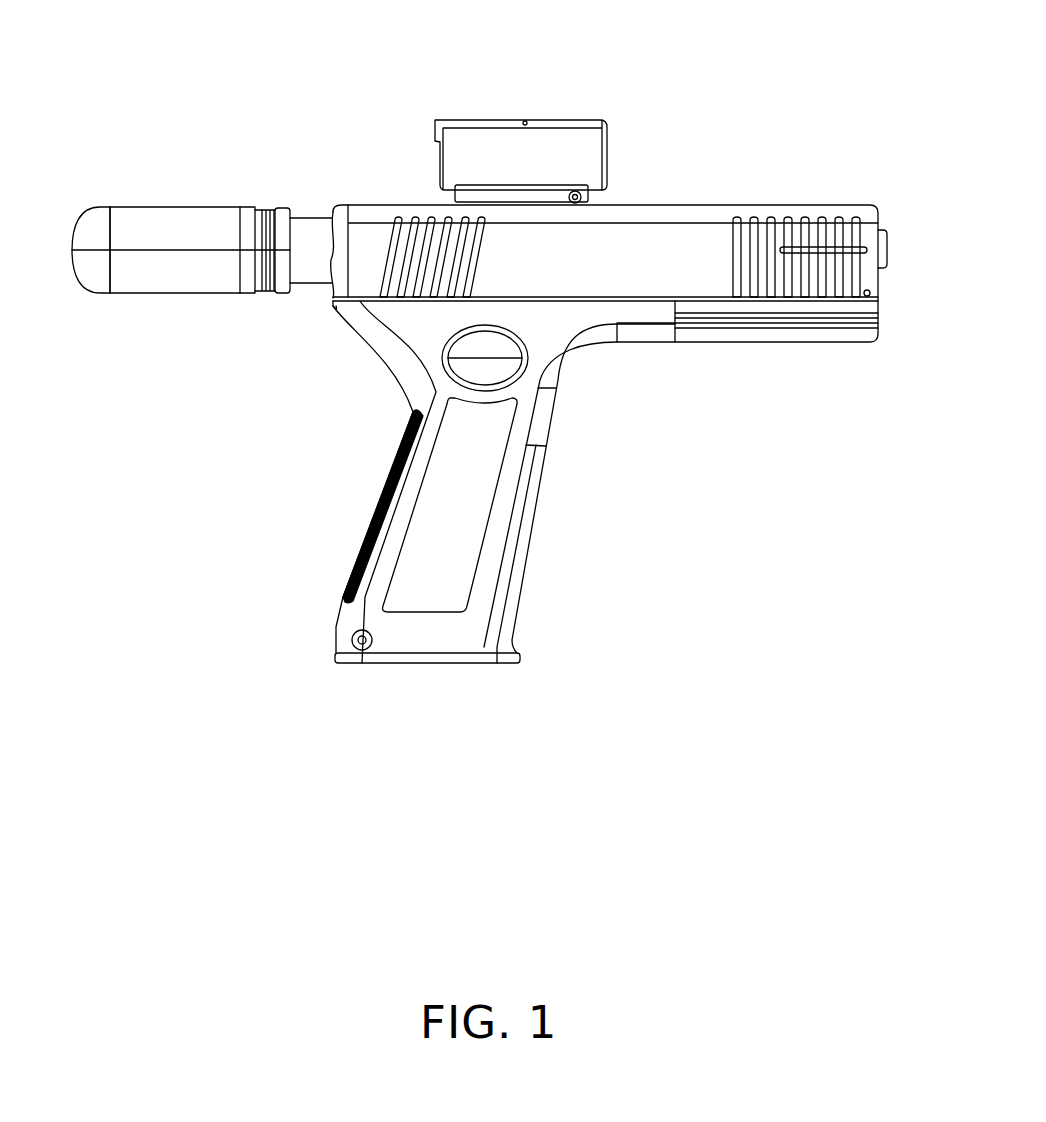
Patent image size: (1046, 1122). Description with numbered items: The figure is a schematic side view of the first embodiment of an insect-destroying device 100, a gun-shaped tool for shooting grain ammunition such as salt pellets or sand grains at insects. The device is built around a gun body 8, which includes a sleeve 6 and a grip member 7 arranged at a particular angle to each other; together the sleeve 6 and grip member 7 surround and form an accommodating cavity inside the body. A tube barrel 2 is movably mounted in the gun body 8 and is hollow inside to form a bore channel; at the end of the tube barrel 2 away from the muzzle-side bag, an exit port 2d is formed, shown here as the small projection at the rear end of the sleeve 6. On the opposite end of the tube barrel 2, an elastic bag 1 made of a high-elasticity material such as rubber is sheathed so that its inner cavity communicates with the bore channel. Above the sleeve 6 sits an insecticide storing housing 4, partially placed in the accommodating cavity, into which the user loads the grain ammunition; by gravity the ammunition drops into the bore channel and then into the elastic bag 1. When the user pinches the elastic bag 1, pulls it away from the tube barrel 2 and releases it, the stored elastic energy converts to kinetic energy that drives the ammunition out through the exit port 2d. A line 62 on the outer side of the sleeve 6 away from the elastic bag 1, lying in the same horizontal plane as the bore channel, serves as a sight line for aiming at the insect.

The insect-destroying device 100 is at (542, 60).
The elastic bag 1 is at (116, 234).
The tube barrel 2 is at (318, 250).
The exit port 2d is at (887, 267).
The insecticide storing housing 4 is at (453, 148).
The sleeve 6 is at (652, 218).
The line 62 is at (806, 250).
The grip member 7 is at (523, 475).
The gun body 8 is at (800, 344).